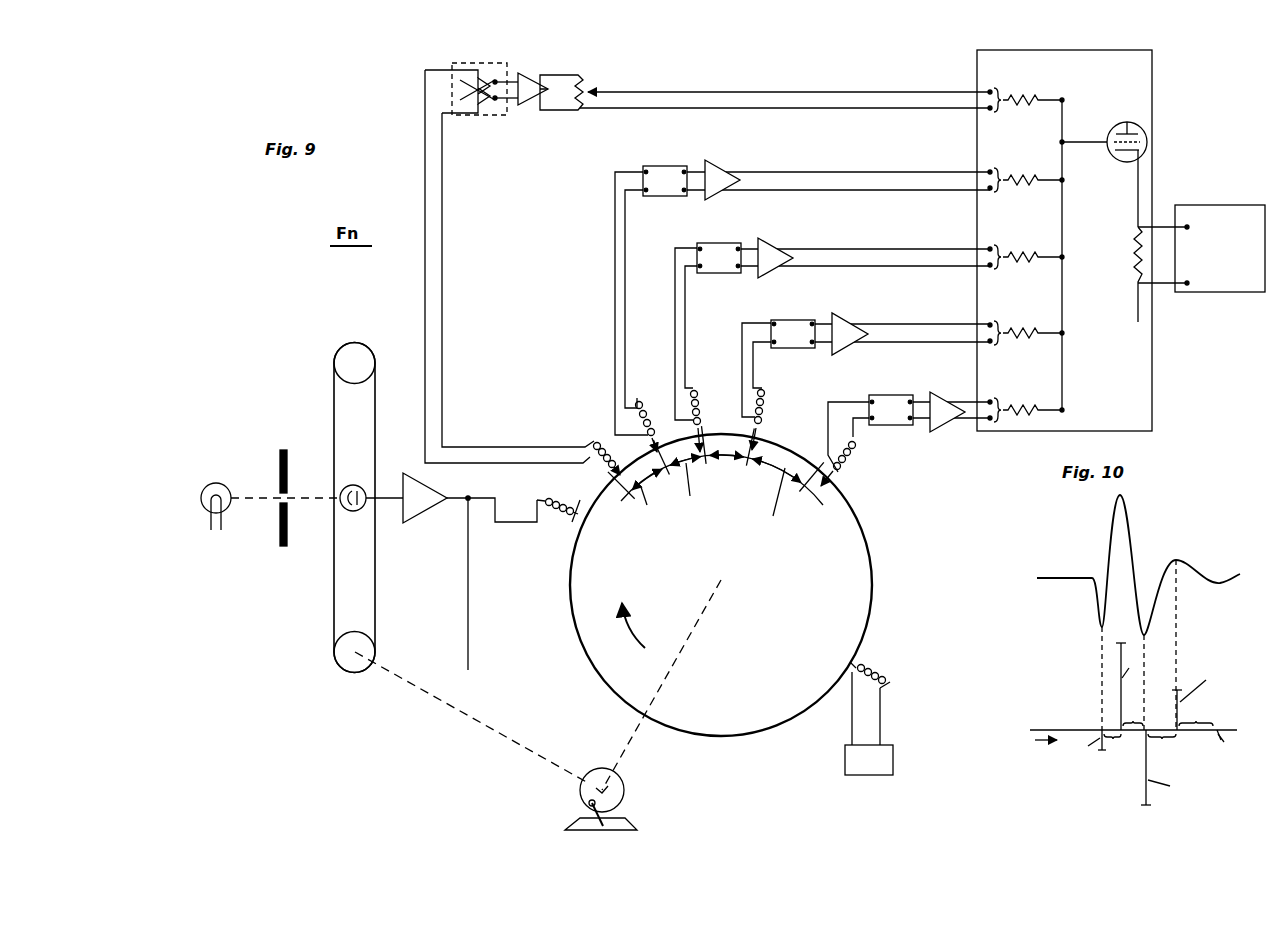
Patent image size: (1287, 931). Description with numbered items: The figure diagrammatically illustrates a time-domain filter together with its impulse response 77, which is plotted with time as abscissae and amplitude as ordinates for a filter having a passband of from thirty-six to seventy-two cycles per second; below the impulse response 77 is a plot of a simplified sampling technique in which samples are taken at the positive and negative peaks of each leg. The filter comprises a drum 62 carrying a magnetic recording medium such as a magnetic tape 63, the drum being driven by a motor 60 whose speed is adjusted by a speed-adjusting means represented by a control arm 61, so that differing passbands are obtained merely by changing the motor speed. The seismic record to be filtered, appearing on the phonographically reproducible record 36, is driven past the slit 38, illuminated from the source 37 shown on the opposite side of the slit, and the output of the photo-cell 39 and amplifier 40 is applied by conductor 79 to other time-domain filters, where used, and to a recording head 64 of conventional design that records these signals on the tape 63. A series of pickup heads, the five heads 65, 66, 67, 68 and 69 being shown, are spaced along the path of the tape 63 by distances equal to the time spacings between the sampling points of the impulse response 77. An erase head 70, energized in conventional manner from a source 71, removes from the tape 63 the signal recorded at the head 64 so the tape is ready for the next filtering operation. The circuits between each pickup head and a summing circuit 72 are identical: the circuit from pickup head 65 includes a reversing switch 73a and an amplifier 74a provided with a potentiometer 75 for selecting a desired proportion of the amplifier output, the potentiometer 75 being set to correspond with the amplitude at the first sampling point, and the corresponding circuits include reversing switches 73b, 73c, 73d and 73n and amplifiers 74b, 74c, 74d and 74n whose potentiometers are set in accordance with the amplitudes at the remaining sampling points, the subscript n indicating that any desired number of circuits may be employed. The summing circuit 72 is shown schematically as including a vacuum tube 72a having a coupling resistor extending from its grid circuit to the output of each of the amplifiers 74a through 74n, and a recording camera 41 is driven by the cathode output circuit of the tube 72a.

In FIG. 9, the phonographically reproducible record 36 is at (334, 598).
In FIG. 9, the lamp 37 is at (211, 485).
In FIG. 9, the slit 38 is at (278, 495).
In FIG. 9, the photo-cell 39 is at (353, 485).
In FIG. 9, the amplifier 40 is at (430, 512).
In FIG. 9, the recording camera 41 is at (1215, 295).
In FIG. 9, the motor 60 is at (616, 793).
In FIG. 9, the control arm 61 is at (575, 818).
In FIG. 9, the drum 62 is at (873, 560).
In FIG. 9, the magnetic tape 63 is at (571, 604).
In FIG. 9, the recording head 64 is at (553, 520).
In FIG. 9, the pickup head 65 is at (590, 448).
In FIG. 9, the pickup head 66 is at (640, 410).
In FIG. 9, the pickup head 67 is at (697, 396).
In FIG. 9, the pickup head 68 is at (766, 407).
In FIG. 9, the pickup head 69 is at (850, 462).
In FIG. 9, the erase head 70 is at (879, 668).
In FIG. 9, the source 71 is at (893, 764).
In FIG. 9, the summing circuit 72 is at (1153, 181).
In FIG. 9, the vacuum tube 72a is at (1140, 128).
In FIG. 9, the reversing switch 73a is at (455, 68).
In FIG. 9, the reversing switch 73b is at (657, 190).
In FIG. 9, the reversing switch 73c is at (720, 272).
In FIG. 9, the reversing switch 73d is at (790, 348).
In FIG. 9, the reversing switch 73n is at (893, 425).
In FIG. 9, the amplifier 74a is at (530, 78).
In FIG. 9, the amplifier 74b is at (718, 172).
In FIG. 9, the amplifier 74c is at (770, 250).
In FIG. 9, the amplifier 74d is at (845, 325).
In FIG. 9, the amplifier 74n is at (925, 405).
In FIG. 9, the potentiometer 75 is at (588, 86).
In FIG. 10, the impulse response 77 is at (1197, 550).
In FIG. 9, the conductor 79 is at (468, 614).